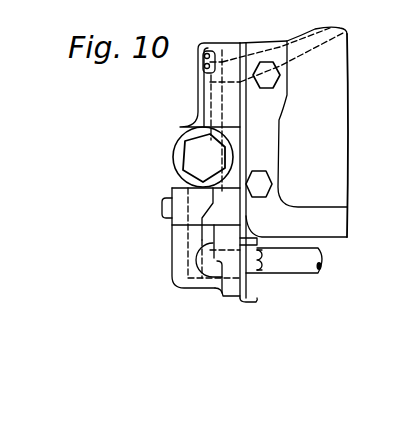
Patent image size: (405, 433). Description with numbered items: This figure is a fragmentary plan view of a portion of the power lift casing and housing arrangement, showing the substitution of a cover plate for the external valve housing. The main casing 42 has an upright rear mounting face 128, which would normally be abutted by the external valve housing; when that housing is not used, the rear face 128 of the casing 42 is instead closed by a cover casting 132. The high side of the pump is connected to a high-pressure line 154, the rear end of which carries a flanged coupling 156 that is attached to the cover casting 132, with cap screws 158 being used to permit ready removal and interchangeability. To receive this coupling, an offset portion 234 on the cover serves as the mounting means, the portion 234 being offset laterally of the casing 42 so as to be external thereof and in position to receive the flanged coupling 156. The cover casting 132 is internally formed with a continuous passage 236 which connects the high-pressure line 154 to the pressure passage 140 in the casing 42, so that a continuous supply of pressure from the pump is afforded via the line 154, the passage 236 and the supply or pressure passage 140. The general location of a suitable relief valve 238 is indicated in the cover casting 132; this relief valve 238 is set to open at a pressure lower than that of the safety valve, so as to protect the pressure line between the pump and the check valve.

The casing 42 is at (343, 106).
The pressure passage 140 is at (328, 28).
The rear mounting face 128 is at (240, 95).
The relief valve 238 is at (200, 157).
The cover casting 132 is at (172, 281).
The continuous passage 236 is at (188, 238).
The offset portion 234 is at (222, 299).
The flanged coupling 156 is at (250, 301).
The high-pressure line 154 is at (322, 253).
The cap screws 158 is at (268, 271).